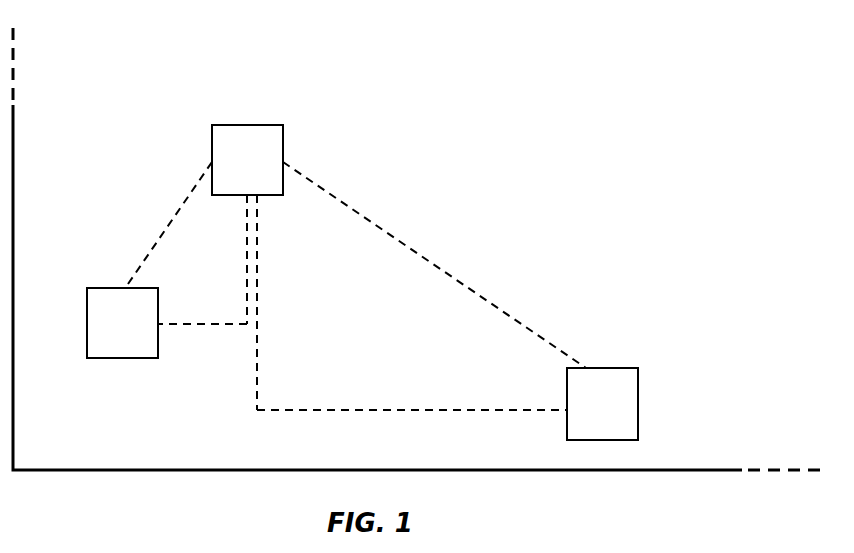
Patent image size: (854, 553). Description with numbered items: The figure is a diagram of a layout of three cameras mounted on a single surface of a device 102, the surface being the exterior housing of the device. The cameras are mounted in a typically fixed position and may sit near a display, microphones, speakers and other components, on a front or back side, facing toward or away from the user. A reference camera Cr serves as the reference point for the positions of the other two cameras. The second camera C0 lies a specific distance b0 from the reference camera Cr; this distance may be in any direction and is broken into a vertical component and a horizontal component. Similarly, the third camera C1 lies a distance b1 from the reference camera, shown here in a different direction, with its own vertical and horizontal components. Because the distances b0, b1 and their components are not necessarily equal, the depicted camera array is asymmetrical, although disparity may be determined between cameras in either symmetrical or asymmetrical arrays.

The device 102 is at (416, 249).
The reference camera Cr is at (247, 160).
The second camera C0 is at (122, 323).
The third camera C1 is at (602, 404).
The distance b0 is at (167, 223).
The distance b1 is at (434, 265).